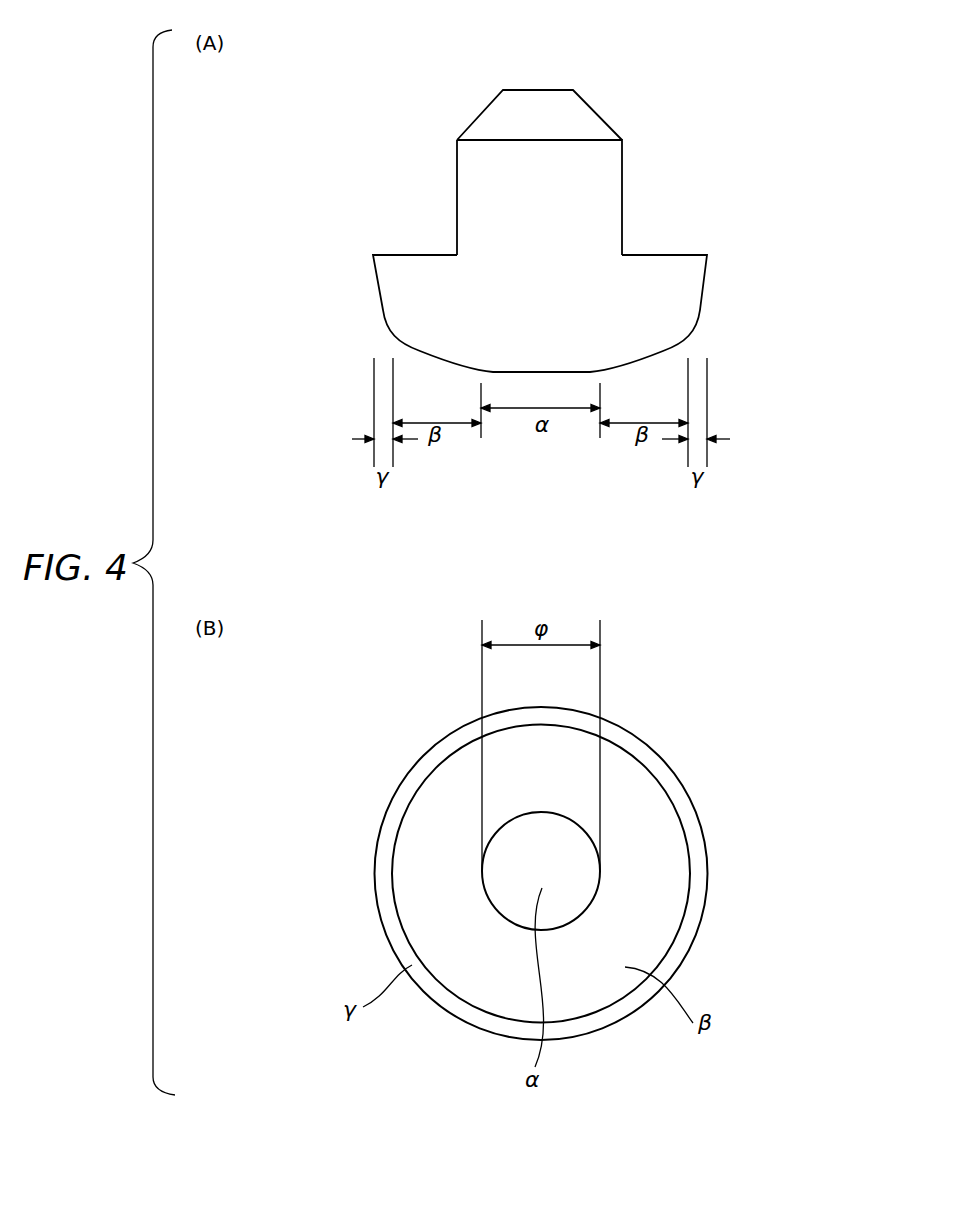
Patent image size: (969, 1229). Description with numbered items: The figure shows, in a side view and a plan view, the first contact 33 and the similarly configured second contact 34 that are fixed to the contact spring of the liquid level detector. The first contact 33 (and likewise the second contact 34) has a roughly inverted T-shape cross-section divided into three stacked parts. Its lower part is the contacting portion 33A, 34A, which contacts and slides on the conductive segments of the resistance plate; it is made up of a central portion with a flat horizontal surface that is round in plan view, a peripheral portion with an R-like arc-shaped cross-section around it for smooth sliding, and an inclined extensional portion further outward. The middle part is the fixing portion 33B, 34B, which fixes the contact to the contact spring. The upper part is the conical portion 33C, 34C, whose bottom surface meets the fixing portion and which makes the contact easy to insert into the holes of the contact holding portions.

The first contact 33 is at (533, 231).
The second contact 34 is at (533, 231).
The contacting portion 33A is at (455, 313).
The contacting portion 34A is at (360, 255).
The fixing portion 33B is at (412, 197).
The fixing portion 34B is at (412, 140).
The conical portion 33C is at (412, 115).
The conical portion 34C is at (412, 90).